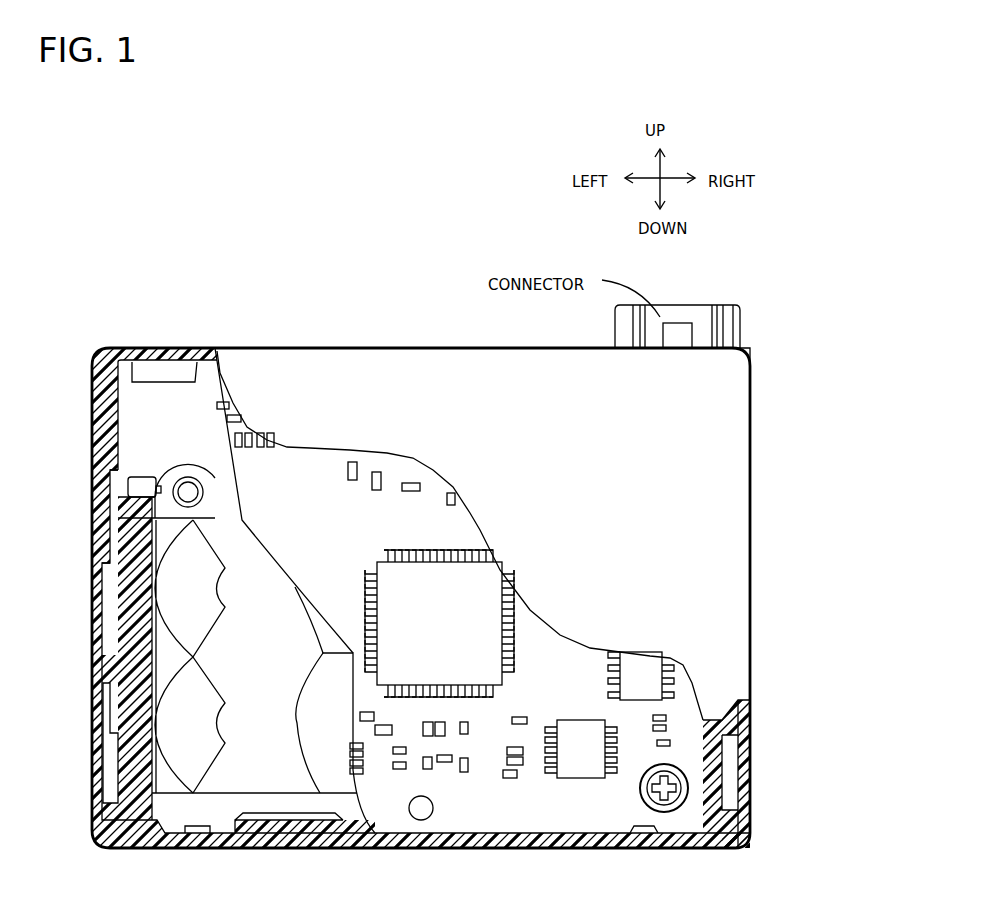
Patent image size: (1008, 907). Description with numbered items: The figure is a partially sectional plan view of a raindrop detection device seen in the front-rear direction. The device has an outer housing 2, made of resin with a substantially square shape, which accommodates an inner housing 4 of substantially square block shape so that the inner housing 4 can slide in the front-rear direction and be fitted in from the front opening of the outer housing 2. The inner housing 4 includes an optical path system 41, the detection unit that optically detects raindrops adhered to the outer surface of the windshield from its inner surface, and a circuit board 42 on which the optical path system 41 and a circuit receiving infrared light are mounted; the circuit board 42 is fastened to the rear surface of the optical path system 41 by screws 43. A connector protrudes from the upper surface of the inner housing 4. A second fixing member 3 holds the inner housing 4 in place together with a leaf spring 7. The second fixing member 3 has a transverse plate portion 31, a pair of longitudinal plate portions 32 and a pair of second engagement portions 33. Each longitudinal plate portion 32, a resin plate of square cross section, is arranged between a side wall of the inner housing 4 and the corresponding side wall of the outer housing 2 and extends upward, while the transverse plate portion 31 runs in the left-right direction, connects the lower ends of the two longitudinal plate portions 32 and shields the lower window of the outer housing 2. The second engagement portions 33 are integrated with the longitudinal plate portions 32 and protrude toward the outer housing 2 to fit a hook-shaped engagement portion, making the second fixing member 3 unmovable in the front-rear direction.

The outer housing 2 is at (728, 403).
The second fixing member 3 is at (122, 515).
The inner housing 4 is at (186, 797).
The leaf spring 7 is at (140, 483).
The transverse plate portion 31 is at (262, 827).
The longitudinal plate portion 32 is at (132, 767).
The second engagement portion 33 is at (108, 664).
The optical path system 41 is at (263, 700).
The circuit board 42 is at (562, 795).
The screw 43 is at (684, 774).